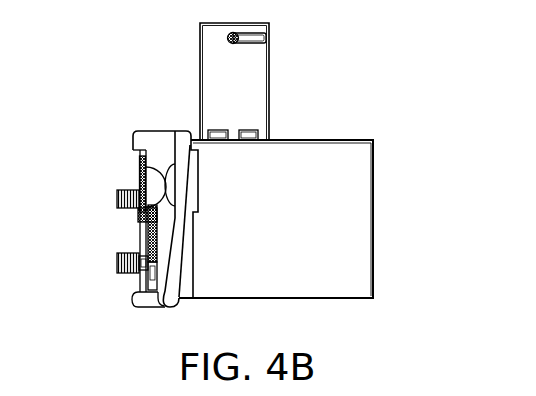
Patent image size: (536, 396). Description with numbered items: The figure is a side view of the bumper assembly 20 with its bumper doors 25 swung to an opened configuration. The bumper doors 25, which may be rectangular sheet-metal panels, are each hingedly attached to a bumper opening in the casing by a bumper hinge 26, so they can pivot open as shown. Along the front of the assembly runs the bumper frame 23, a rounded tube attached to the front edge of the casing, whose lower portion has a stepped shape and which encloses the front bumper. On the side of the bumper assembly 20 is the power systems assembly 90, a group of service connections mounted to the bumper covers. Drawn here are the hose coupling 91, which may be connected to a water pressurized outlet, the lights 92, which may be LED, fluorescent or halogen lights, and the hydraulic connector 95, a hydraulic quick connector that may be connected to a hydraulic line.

The bumper assembly 20 is at (351, 146).
The bumper frame 23 is at (190, 138).
The bumper doors 25 is at (208, 73).
The bumper hinges 26 is at (250, 137).
The power systems assembly 90 is at (121, 190).
The hose coupling 91 is at (140, 228).
The lights 92 is at (137, 163).
The hydraulic connector 95 is at (119, 266).